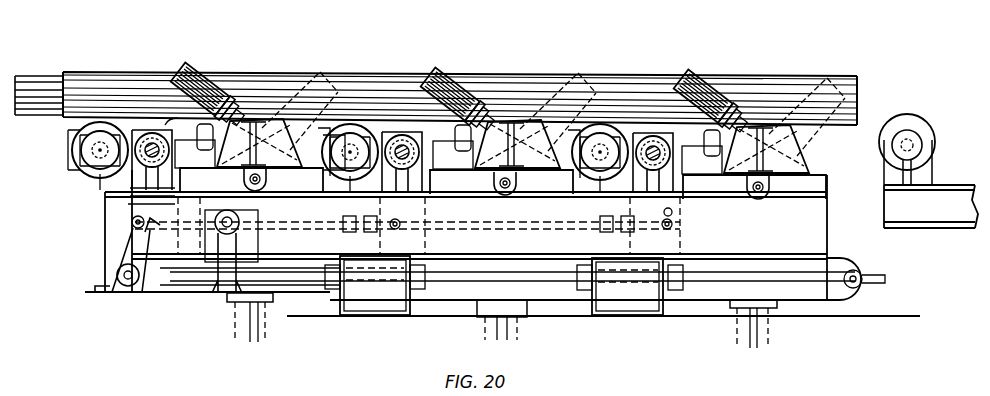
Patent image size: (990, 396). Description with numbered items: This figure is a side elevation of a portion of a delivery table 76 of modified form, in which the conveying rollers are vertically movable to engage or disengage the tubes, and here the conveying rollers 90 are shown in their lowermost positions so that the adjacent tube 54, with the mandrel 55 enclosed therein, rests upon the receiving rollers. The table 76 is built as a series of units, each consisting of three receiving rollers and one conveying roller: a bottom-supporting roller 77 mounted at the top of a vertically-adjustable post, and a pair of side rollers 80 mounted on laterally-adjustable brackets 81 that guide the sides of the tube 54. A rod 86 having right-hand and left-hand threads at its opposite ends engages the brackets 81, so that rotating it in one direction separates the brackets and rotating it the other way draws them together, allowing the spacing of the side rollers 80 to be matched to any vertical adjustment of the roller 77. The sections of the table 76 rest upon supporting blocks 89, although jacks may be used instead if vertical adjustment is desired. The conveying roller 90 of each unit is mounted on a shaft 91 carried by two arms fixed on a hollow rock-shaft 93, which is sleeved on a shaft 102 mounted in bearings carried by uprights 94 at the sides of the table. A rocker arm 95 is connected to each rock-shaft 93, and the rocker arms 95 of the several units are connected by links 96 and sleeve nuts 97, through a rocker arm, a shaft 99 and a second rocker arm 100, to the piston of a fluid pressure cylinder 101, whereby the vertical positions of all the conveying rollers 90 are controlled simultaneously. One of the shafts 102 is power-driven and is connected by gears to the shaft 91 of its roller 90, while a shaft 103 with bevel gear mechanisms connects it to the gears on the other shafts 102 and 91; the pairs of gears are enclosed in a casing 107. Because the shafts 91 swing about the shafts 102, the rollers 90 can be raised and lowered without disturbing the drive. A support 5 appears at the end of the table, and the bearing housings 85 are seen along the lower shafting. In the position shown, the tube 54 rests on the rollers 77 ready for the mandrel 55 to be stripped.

The support base 5 is at (940, 230).
The tube 54 is at (100, 80).
The mandrel 55 is at (58, 76).
The delivery table 76 is at (828, 240).
The bottom-supporting roller 77 is at (258, 124).
The side rollers 80 is at (205, 82).
The brackets 81 is at (806, 162).
The bearing box 85 is at (336, 288).
The rod 86 is at (506, 190).
The supporting blocks 89 is at (387, 300).
The conveying roller 90 is at (82, 176).
The shaft 91 is at (102, 142).
The hollow rock-shaft 93 is at (152, 142).
The uprights 94 is at (133, 190).
The rocker arm 95 is at (131, 216).
The links 96 is at (276, 224).
The sleeve nuts 97 is at (366, 232).
The shaft 99 is at (126, 286).
The second rocker arm 100 is at (118, 256).
The fluid pressure cylinder 101 is at (258, 240).
The shaft 102 is at (182, 118).
The shaft 103 is at (316, 135).
The casing 107 is at (70, 146).